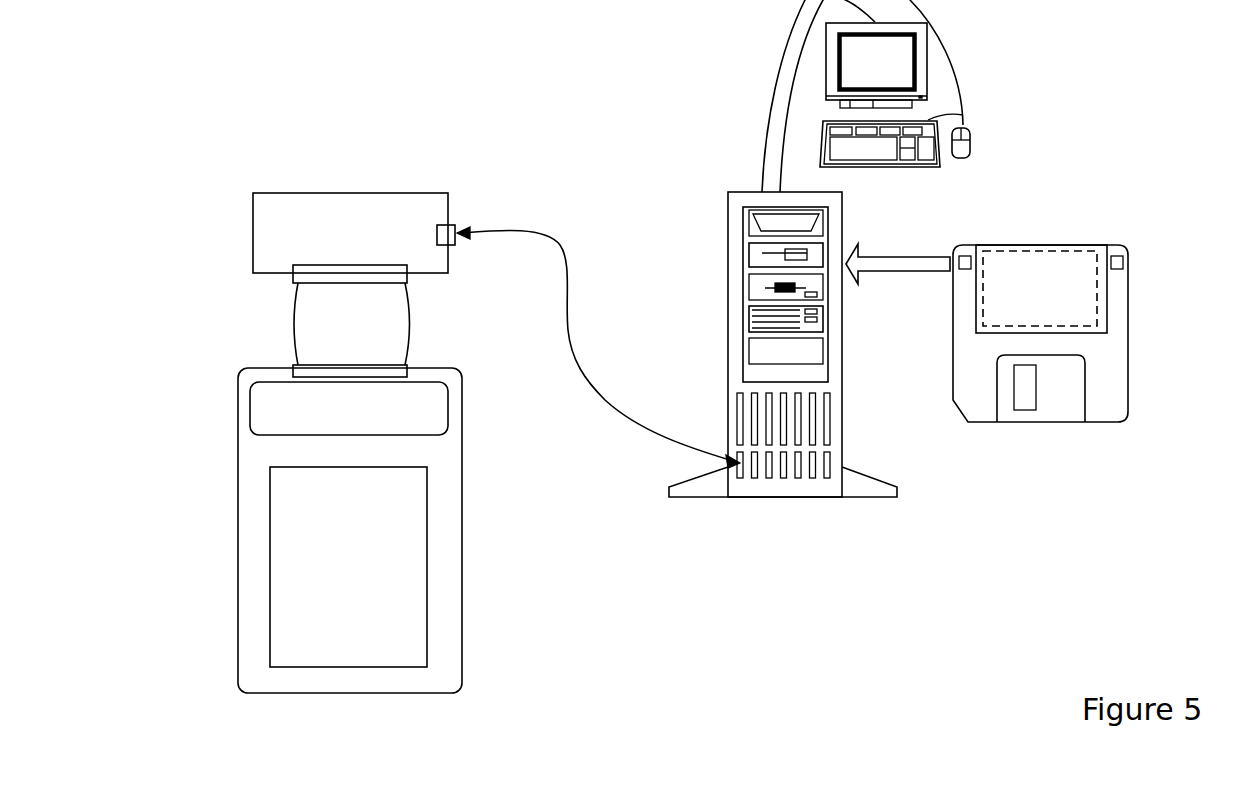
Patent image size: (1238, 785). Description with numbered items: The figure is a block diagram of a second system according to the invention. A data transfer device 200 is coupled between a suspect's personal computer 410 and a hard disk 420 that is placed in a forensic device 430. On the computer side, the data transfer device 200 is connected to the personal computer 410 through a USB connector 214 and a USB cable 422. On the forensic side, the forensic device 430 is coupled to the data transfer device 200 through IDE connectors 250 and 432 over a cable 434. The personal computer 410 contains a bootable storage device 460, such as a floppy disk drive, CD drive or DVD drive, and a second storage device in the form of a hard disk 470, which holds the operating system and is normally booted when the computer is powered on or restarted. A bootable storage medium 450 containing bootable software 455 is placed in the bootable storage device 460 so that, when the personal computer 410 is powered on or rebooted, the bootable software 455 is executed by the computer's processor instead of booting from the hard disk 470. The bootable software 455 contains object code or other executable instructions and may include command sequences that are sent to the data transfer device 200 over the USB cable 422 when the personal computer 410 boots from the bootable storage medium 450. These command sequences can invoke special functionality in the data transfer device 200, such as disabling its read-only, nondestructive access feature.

The data transfer device 200 is at (352, 193).
The USB connector 214 is at (450, 235).
The IDE connector 250 is at (293, 277).
The IDE connector 432 is at (292, 366).
The cable 434 is at (408, 328).
The hard disk 420 is at (348, 567).
The forensic device 430 is at (462, 497).
The USB cable 422 is at (566, 255).
The personal computer 410 is at (783, 497).
The bootable storage device 460 is at (815, 251).
The hard disk 470 is at (817, 318).
The bootable storage medium 450 is at (968, 421).
The bootable software 455 is at (1040, 288).